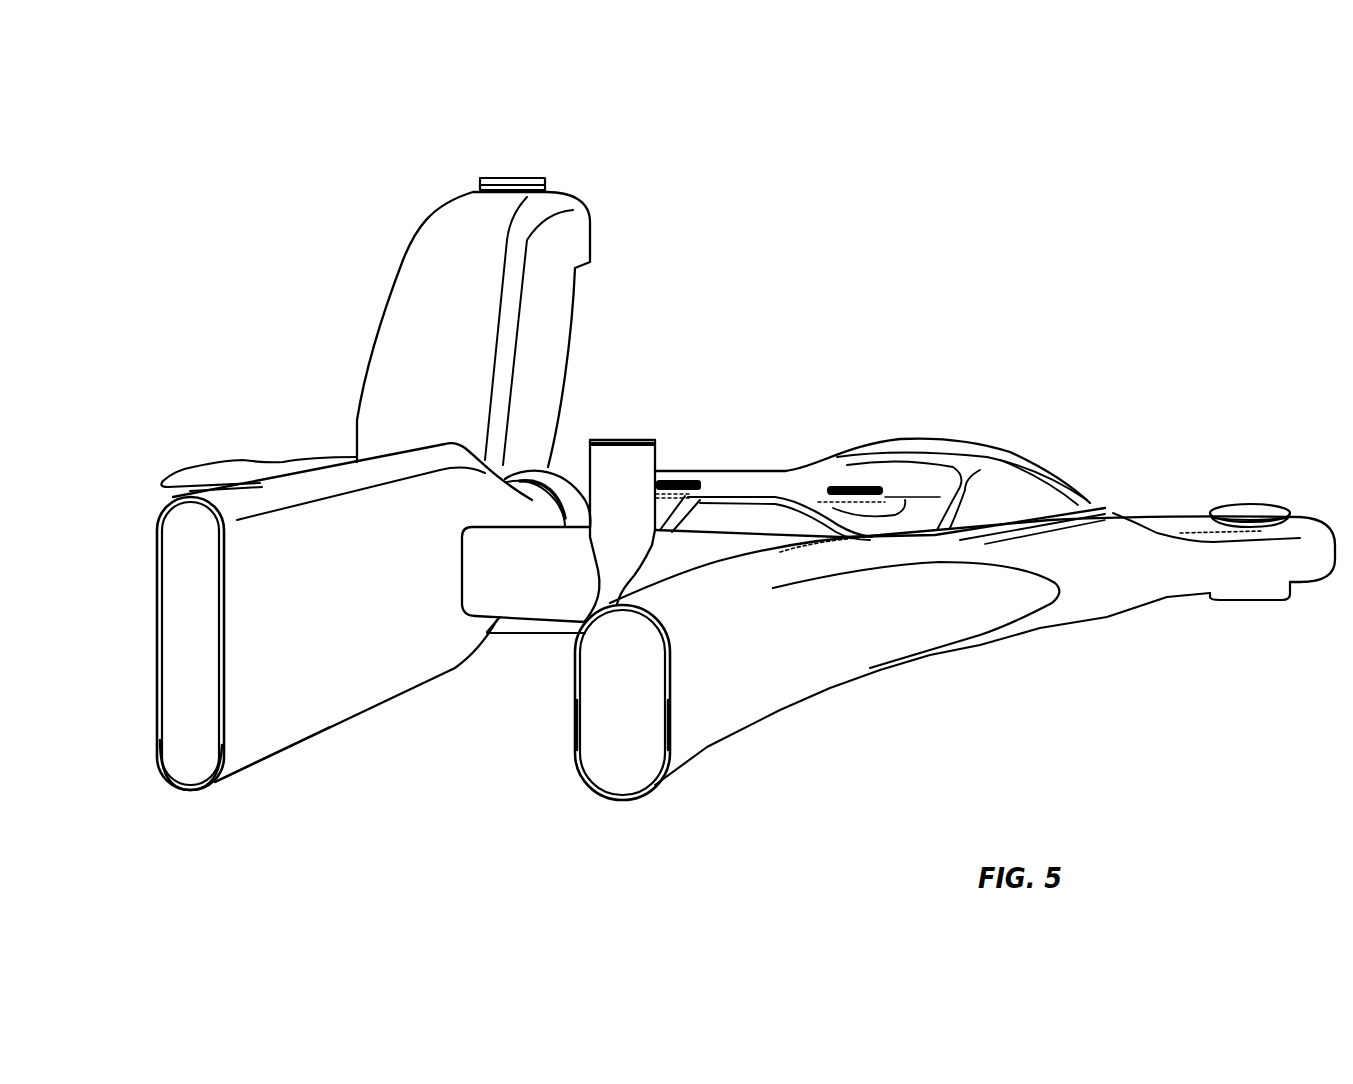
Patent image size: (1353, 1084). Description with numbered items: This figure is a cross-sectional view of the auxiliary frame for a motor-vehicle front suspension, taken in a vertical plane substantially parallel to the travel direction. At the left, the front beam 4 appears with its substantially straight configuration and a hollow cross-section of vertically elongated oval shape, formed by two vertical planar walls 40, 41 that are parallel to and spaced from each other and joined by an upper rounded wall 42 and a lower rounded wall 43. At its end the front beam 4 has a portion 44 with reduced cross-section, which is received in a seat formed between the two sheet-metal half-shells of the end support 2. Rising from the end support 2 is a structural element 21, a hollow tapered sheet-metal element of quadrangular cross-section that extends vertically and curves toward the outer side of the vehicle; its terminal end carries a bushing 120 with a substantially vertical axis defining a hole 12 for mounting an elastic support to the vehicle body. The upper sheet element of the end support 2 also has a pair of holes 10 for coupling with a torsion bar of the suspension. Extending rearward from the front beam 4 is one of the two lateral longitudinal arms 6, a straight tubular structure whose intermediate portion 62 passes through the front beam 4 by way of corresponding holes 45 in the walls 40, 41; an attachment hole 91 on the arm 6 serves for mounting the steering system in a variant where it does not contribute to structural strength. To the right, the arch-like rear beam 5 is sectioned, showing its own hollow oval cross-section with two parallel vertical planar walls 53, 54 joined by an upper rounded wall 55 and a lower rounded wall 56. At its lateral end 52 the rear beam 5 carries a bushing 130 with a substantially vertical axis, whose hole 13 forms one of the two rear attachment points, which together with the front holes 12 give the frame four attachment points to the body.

The end support 2 is at (865, 445).
The front beam 4 is at (311, 741).
The rear beam 5 is at (772, 718).
The lateral longitudinal arm 6 is at (535, 586).
The holes 10 is at (835, 487).
The hole 12 is at (543, 178).
The hole 13 is at (1240, 503).
The structural element 21 is at (417, 313).
The vertical planar wall 40 is at (183, 633).
The vertical planar wall 41 is at (250, 712).
The upper rounded wall 42 is at (168, 507).
The lower rounded wall 43 is at (183, 783).
The portion with reduced cross-section 44 is at (537, 520).
The holes 45 is at (462, 576).
The lateral end 52 is at (1158, 578).
The vertical planar wall 53 is at (595, 742).
The vertical planar wall 54 is at (697, 730).
The upper rounded wall 55 is at (630, 603).
The lower rounded wall 56 is at (625, 805).
The intermediate portion 62 is at (493, 556).
The attachment hole 91 is at (627, 480).
The bushing 120 is at (512, 182).
The bushing 130 is at (1210, 512).